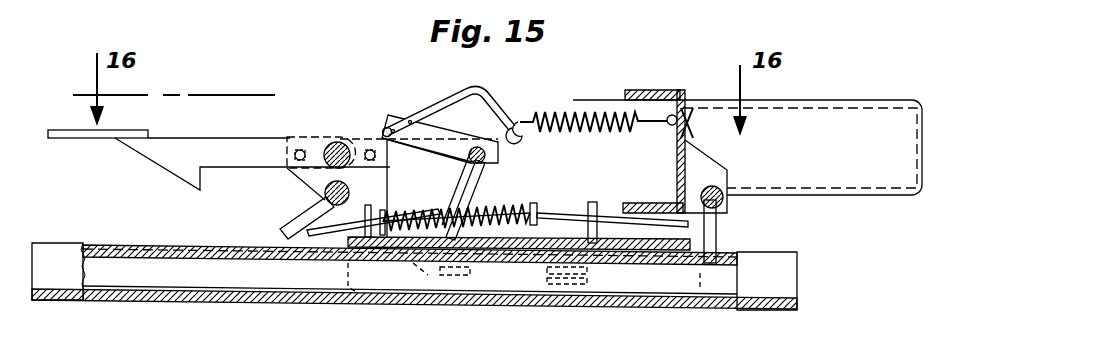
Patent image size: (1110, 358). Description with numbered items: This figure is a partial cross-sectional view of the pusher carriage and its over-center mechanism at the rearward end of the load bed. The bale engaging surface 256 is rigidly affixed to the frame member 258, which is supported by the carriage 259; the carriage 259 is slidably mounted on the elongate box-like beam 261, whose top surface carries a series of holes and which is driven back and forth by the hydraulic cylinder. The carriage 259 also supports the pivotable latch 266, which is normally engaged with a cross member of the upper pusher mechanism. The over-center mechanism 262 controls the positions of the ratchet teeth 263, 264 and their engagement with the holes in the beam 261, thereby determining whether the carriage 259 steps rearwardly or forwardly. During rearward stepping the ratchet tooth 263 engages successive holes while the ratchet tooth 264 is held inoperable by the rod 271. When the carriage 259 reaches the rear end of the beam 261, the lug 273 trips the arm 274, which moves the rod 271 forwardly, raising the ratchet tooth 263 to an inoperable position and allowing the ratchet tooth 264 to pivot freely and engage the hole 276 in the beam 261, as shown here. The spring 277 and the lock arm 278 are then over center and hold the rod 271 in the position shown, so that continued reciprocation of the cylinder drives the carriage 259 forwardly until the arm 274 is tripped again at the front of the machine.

The bale engaging surface 256 is at (892, 103).
The frame member 258 is at (677, 172).
The carriage 259 is at (550, 238).
The elongate box-like beam 261 is at (182, 250).
The over-center mechanism 262 is at (425, 83).
The ratchet tooth 263 is at (297, 217).
The ratchet tooth 264 is at (717, 233).
The pivotable latch 266 is at (194, 138).
The rod 271 is at (563, 214).
The lug 273 is at (457, 275).
The arm 274 is at (474, 174).
The hole 276 is at (697, 265).
The spring 277 is at (549, 112).
The lock arm 278 is at (475, 92).